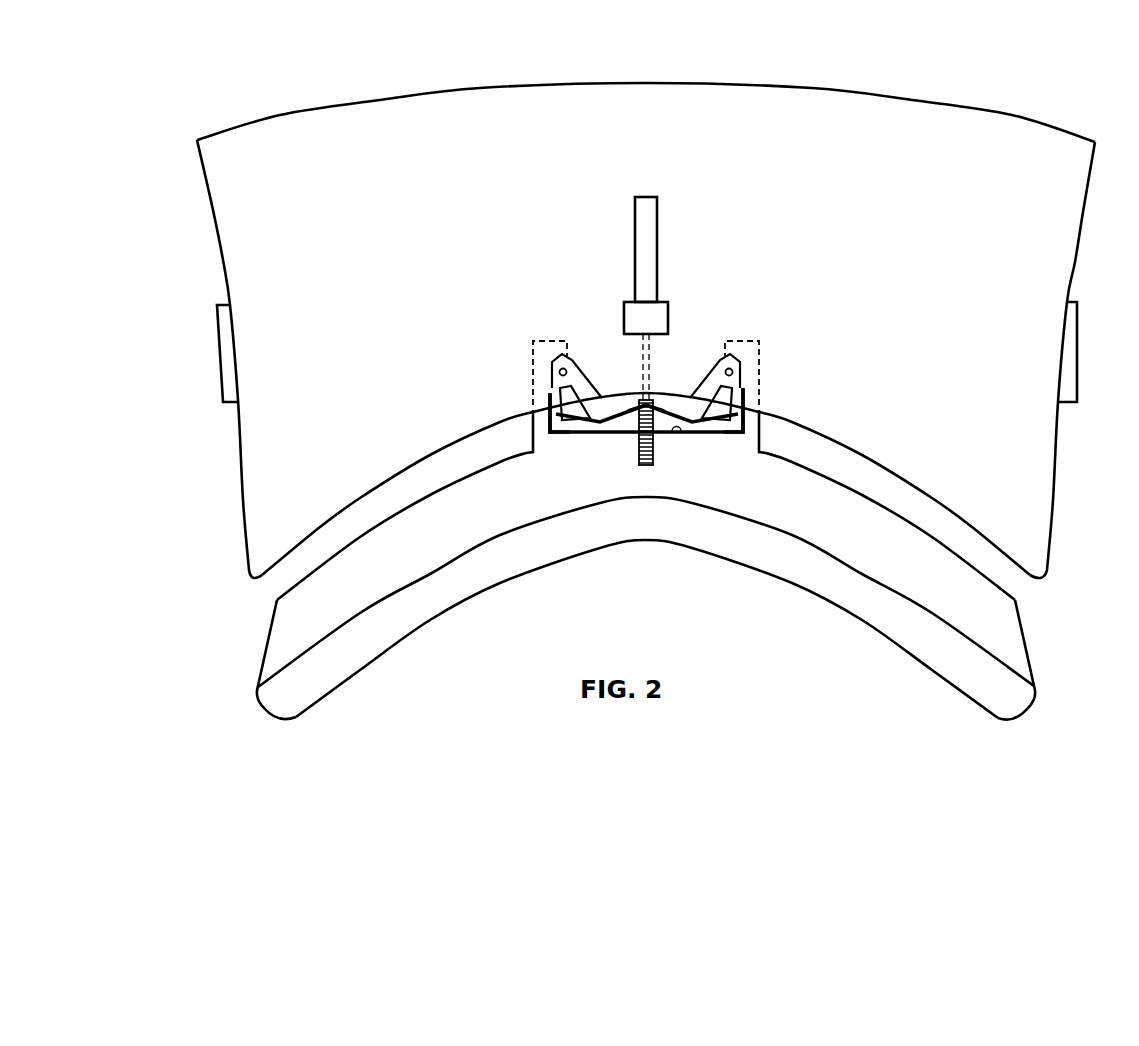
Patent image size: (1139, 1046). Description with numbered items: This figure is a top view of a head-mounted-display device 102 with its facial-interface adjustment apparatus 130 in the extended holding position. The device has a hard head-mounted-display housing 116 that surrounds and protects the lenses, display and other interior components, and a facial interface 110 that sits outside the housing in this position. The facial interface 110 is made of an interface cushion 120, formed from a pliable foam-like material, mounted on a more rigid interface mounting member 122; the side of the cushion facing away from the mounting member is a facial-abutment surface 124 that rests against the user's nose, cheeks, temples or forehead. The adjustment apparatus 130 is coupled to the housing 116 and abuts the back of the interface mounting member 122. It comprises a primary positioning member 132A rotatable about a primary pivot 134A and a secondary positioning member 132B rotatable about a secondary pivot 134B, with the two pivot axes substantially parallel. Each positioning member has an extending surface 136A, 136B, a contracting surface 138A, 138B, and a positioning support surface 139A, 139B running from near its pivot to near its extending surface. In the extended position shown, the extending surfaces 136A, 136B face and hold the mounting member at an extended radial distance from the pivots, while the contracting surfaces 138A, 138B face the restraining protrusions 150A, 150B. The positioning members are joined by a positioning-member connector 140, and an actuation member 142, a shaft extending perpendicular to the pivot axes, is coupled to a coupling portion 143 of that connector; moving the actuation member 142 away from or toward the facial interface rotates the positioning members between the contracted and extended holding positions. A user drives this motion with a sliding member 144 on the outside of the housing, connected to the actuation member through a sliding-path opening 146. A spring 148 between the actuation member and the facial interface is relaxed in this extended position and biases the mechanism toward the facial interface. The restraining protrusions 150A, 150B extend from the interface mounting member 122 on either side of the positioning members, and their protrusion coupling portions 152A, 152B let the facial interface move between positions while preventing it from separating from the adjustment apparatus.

The head-mounted-display device 102 is at (128, 143).
The head-mounted-display housing 116 is at (812, 84).
The facial interface 110 is at (256, 688).
The interface cushion 120 is at (1022, 710).
The interface mounting member 122 is at (1032, 660).
The facial-abutment surface 124 is at (945, 685).
The facial-interface adjustment apparatus 130 is at (804, 333).
The primary positioning member 132A is at (567, 433).
The secondary positioning member 132B is at (730, 433).
The primary pivot 134A is at (550, 371).
The secondary pivot 134B is at (745, 368).
The extending surface 136A is at (583, 433).
The extending surface 136B is at (707, 433).
The contracting surface 138A is at (543, 389).
The contracting surface 138B is at (752, 390).
The positioning support surface 139A is at (566, 355).
The positioning support surface 139B is at (718, 355).
The positioning-member connector 140 is at (610, 423).
The actuation member 142 is at (638, 350).
The coupling portion 143 is at (665, 393).
The sliding member 144 is at (660, 300).
The sliding-path opening 146 is at (634, 213).
The spring 148 is at (647, 467).
The restraining protrusion 150A is at (533, 420).
The restraining protrusion 150B is at (763, 430).
The protrusion coupling portion 152A is at (555, 342).
The protrusion coupling portion 152B is at (733, 338).